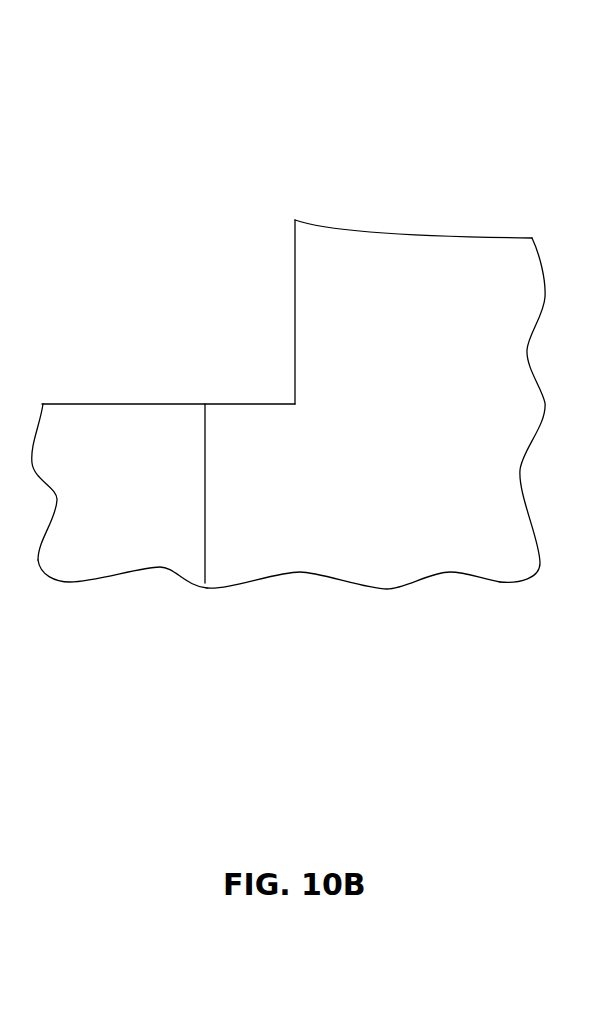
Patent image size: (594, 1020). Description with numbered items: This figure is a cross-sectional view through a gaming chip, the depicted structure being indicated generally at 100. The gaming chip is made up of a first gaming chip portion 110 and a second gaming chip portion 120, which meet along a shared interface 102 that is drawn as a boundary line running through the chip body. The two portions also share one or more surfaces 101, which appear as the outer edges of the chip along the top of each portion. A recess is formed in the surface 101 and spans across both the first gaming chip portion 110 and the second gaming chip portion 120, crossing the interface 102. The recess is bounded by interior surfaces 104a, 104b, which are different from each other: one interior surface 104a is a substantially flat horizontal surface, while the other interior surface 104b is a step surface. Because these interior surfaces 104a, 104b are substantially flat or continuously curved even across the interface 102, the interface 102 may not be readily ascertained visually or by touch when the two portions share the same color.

The semiconductor structure assembly 100 is at (190, 92).
The surface 101 is at (105, 404).
The interface 102 is at (203, 515).
The interior surface 104a is at (240, 404).
The interior surface 104b is at (295, 270).
The first gaming chip portion 110 is at (77, 532).
The second gaming chip portion 120 is at (427, 533).